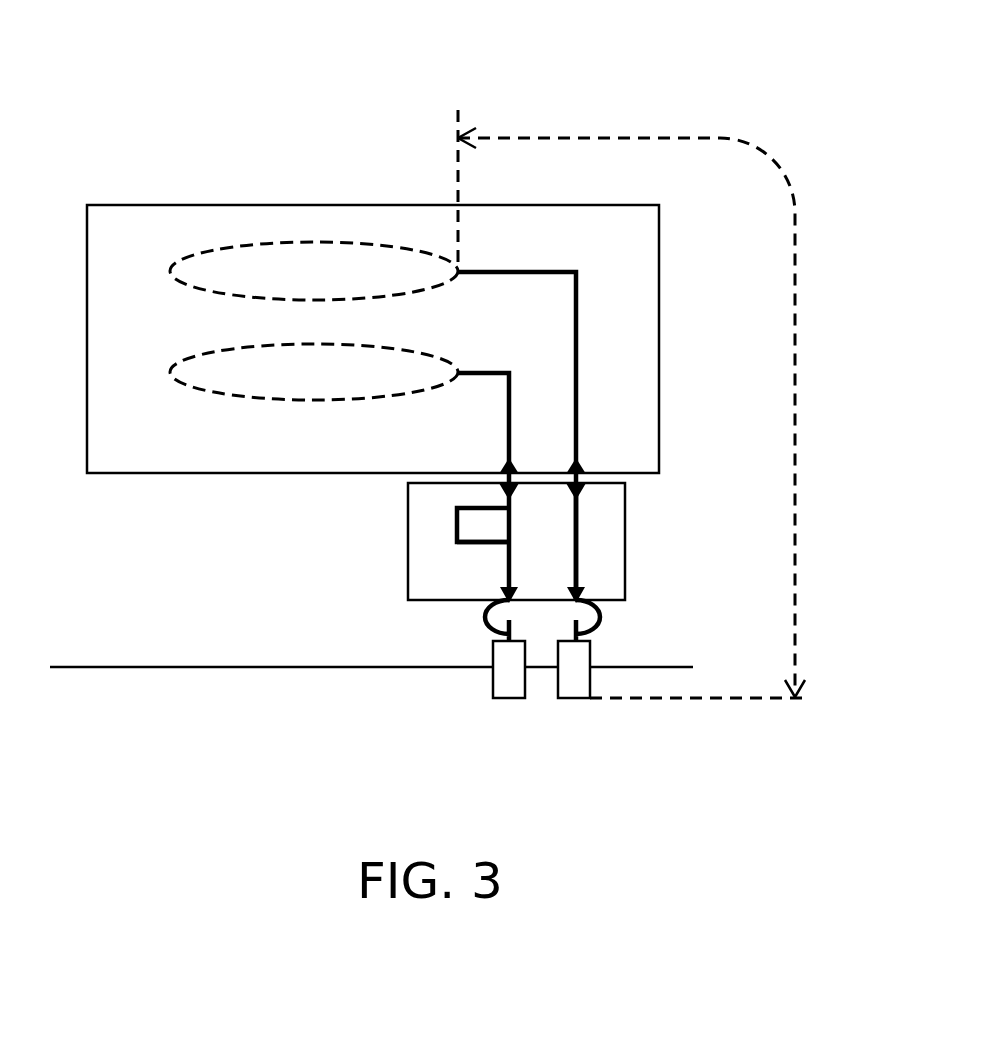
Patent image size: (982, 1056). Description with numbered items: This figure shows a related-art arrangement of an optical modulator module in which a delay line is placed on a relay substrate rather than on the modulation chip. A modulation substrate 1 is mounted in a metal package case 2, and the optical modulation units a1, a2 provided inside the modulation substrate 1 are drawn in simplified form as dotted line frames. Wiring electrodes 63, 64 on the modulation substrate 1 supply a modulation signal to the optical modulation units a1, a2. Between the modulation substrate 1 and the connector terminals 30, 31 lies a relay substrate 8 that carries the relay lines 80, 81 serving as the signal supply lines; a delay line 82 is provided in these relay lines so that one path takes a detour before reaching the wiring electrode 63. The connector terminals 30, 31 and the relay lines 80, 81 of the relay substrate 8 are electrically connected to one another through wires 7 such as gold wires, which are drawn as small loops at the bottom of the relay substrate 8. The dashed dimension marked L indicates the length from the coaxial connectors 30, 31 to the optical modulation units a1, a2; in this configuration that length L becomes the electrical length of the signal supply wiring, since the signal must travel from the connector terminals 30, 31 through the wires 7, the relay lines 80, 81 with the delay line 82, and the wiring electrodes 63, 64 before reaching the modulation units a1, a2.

The modulation substrate 1 is at (577, 195).
The optical modulation unit a2 is at (240, 247).
The optical modulation unit a1 is at (245, 398).
The wiring electrode 64 is at (580, 334).
The wiring electrode 63 is at (500, 434).
The relay substrate 8 is at (625, 497).
The delay line 82 is at (447, 523).
The relay line 81 is at (580, 538).
The relay line 80 is at (470, 548).
The wire 7 is at (478, 613).
The package case 2 is at (223, 668).
The connector terminal 30 is at (512, 700).
The connector terminal 31 is at (577, 700).
The length L is at (638, 404).